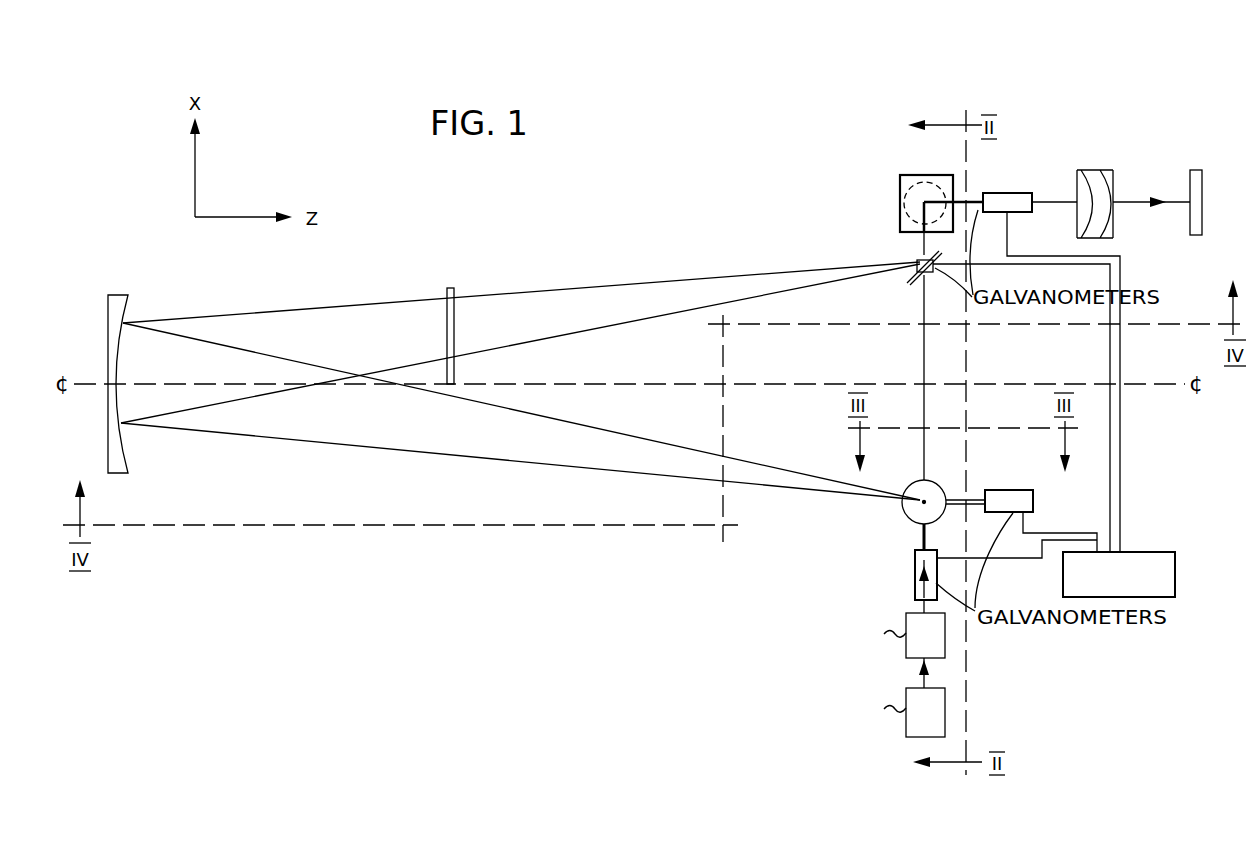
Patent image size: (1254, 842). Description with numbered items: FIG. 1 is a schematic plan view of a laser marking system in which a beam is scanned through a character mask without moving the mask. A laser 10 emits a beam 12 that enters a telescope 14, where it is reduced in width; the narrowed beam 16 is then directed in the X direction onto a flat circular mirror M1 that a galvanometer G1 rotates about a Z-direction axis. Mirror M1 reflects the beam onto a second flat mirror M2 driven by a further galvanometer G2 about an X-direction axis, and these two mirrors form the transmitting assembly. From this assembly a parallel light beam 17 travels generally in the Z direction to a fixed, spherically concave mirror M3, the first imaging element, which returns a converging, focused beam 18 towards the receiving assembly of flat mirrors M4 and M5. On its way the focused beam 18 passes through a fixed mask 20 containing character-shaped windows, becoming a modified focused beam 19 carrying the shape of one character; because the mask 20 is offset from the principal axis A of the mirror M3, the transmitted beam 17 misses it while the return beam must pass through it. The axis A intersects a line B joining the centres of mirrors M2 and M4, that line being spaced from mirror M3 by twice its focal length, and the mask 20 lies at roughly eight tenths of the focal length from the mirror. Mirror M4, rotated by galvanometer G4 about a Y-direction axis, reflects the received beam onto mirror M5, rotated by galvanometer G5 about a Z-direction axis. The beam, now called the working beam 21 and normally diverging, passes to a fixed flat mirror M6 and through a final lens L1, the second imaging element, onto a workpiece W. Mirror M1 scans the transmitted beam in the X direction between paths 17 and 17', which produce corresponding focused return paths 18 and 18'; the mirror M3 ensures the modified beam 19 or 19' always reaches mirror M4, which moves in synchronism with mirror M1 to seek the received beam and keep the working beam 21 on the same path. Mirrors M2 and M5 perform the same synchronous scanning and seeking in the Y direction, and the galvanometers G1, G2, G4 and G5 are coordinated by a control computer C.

The laser 10 is at (935, 717).
The beam 12 is at (920, 680).
The telescope 14 is at (935, 653).
The narrowed beam 16 is at (926, 602).
The parallel light beam 17 is at (520, 461).
The scanned beam path 17' is at (521, 411).
The focused beam 18 is at (520, 343).
The focused beam path 18' is at (521, 292).
The modified focused beam 19 is at (520, 343).
The modified focused beam path 19' is at (521, 282).
The fixed mask 20 is at (450, 288).
The working beam 21 is at (1055, 202).
The flat circular mirror M1 is at (915, 495).
The second flat mirror M2 is at (912, 522).
The spherically concave mirror M3 is at (118, 295).
The flat mirror M4 is at (908, 285).
The flat mirror M5 is at (903, 213).
The fixed flat mirror M6 is at (923, 177).
The galvanometer G1 is at (1013, 491).
The galvanometer G2 is at (915, 577).
The galvanometer G4 is at (931, 276).
The galvanometer G5 is at (1015, 194).
The final lens L1 is at (1105, 190).
The workpiece W is at (1203, 197).
The control computer C is at (1147, 554).
The principal axis A is at (602, 385).
The line B is at (910, 373).